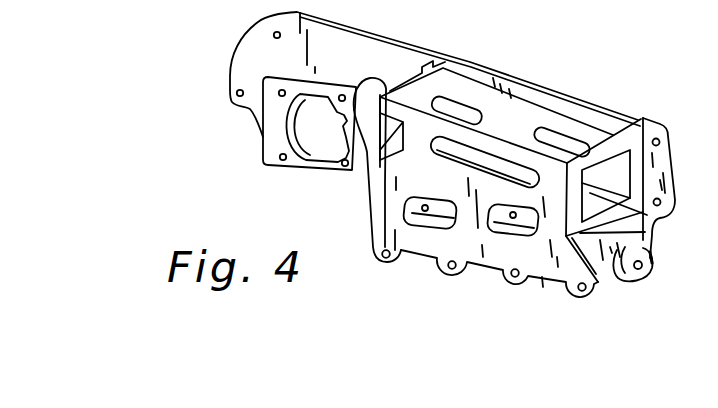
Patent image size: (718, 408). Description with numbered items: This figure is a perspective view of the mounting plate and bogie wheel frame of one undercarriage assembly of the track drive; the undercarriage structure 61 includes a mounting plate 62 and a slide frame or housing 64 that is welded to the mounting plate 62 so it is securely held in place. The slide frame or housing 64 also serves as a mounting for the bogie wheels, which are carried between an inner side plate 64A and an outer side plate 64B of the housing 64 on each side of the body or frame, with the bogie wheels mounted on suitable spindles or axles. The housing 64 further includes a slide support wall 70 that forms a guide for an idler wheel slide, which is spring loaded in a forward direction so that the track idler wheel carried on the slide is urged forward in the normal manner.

The cross member / box frame 61 is at (534, 77).
The mounting plate 62 is at (331, 36).
The slide frame or housing 64 is at (390, 191).
The inner side plate 64A is at (613, 272).
The outer side plate 64B is at (427, 239).
The slide support wall 70 is at (598, 195).